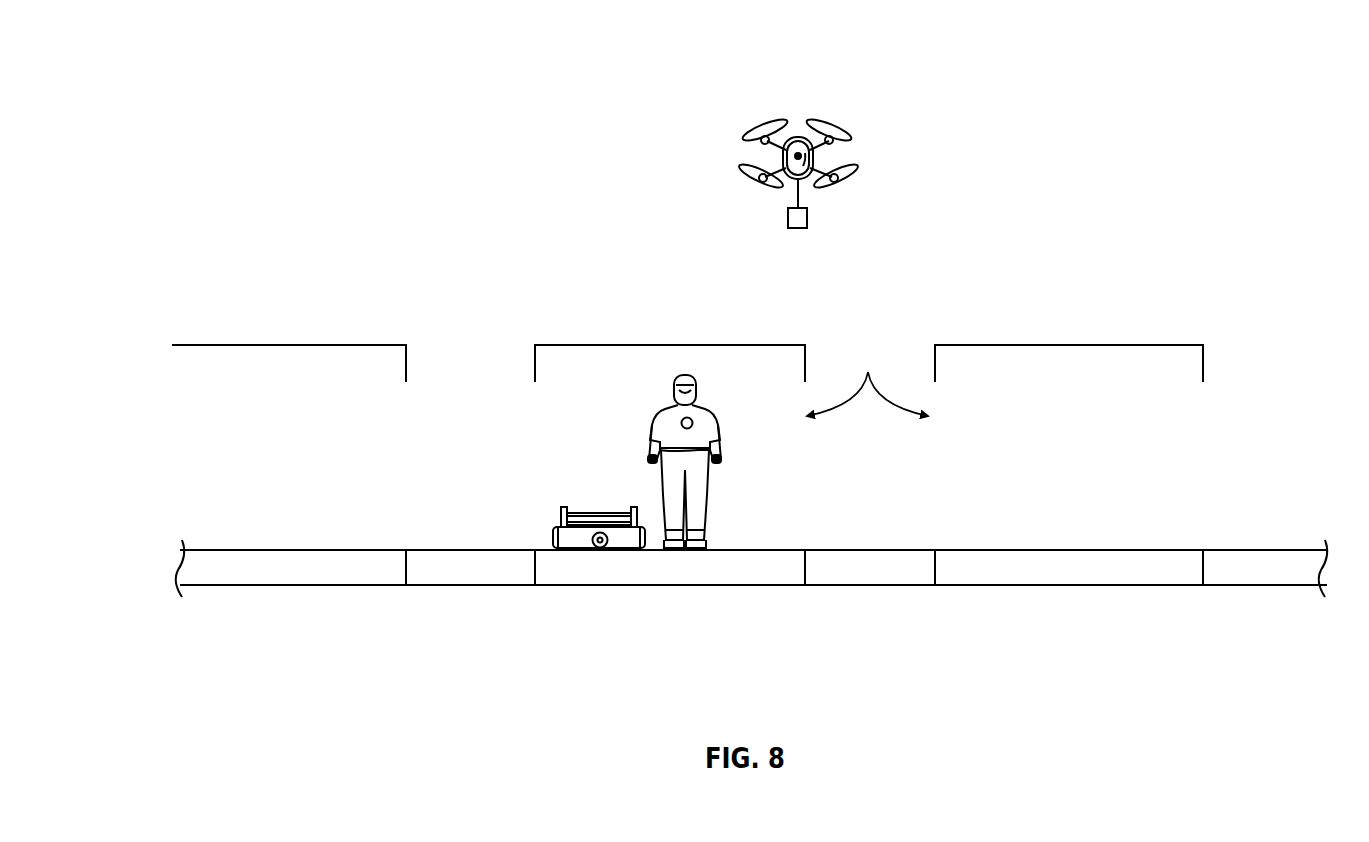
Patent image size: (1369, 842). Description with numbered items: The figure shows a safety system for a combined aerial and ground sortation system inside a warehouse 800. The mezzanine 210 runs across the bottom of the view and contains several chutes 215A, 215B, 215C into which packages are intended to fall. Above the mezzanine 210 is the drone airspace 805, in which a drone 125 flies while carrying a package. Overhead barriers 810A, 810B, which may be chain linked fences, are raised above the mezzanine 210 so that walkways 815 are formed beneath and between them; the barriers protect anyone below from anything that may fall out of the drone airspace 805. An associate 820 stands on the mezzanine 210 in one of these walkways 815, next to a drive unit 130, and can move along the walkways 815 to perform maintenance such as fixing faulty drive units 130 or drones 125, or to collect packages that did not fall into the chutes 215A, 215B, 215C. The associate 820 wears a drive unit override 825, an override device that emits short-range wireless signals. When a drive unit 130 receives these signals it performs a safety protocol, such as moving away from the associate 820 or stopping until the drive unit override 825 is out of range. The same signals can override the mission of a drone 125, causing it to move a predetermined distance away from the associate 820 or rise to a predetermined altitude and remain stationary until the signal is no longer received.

The warehouse 800 is at (1118, 142).
The drone airspace 805 is at (497, 160).
The drone 125 is at (798, 137).
The overhead barrier 810A is at (670, 344).
The overhead barrier 810B is at (1070, 344).
The walkways 815 is at (867, 363).
The associate 820 is at (678, 381).
The drive unit override 825 is at (694, 424).
The drive unit 130 is at (577, 508).
The mezzanine 210 is at (230, 586).
The chute 215A is at (447, 588).
The chute 215B is at (886, 588).
The chute 215C is at (1297, 588).